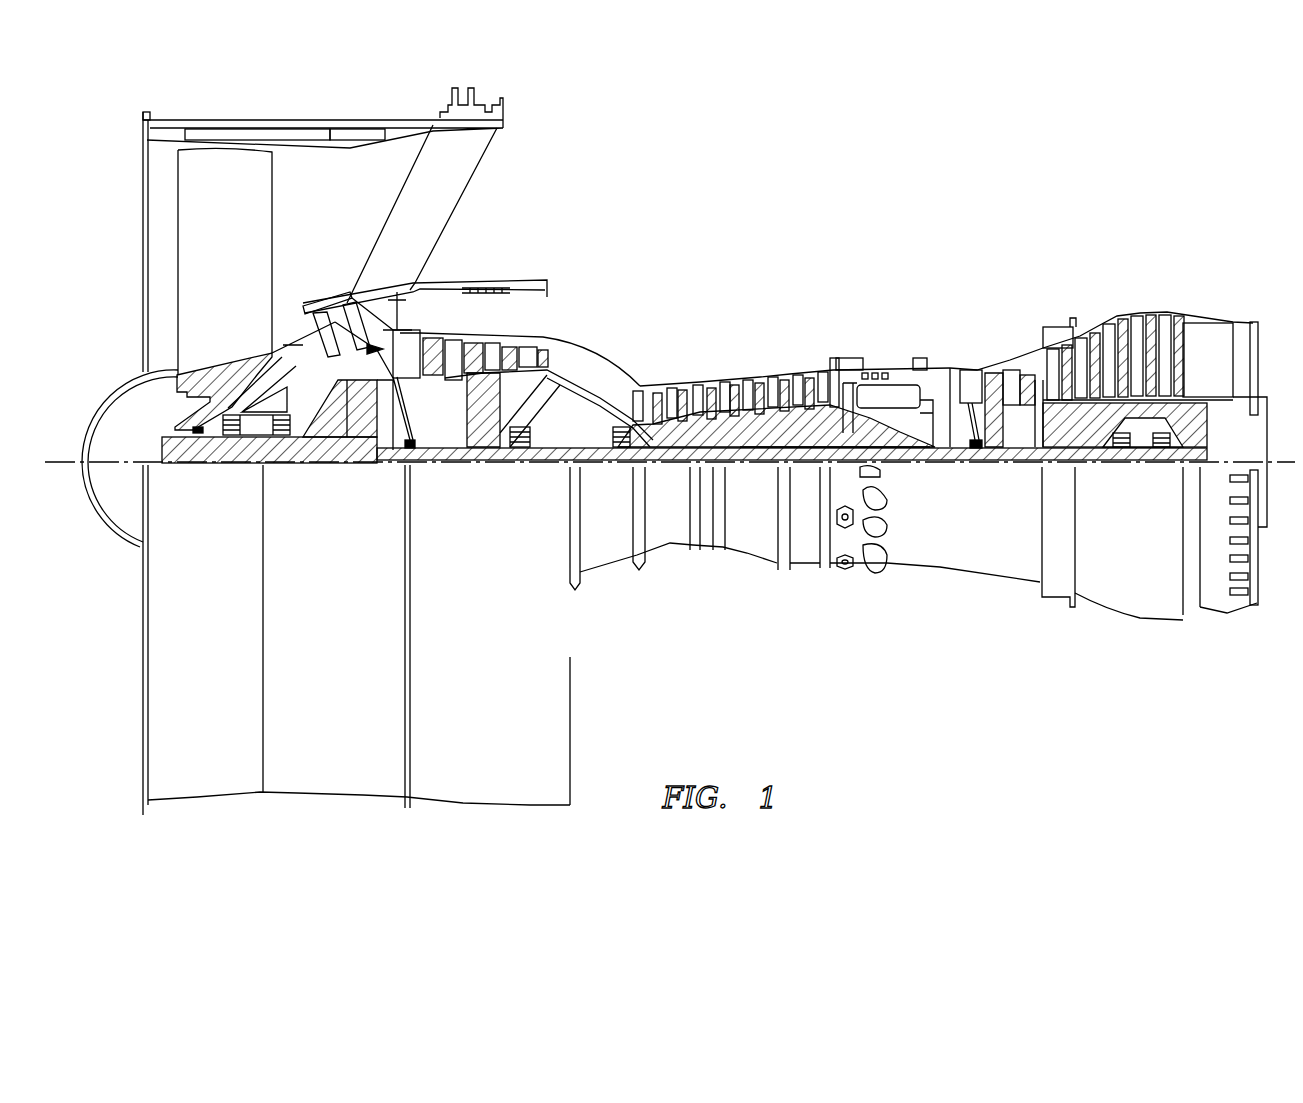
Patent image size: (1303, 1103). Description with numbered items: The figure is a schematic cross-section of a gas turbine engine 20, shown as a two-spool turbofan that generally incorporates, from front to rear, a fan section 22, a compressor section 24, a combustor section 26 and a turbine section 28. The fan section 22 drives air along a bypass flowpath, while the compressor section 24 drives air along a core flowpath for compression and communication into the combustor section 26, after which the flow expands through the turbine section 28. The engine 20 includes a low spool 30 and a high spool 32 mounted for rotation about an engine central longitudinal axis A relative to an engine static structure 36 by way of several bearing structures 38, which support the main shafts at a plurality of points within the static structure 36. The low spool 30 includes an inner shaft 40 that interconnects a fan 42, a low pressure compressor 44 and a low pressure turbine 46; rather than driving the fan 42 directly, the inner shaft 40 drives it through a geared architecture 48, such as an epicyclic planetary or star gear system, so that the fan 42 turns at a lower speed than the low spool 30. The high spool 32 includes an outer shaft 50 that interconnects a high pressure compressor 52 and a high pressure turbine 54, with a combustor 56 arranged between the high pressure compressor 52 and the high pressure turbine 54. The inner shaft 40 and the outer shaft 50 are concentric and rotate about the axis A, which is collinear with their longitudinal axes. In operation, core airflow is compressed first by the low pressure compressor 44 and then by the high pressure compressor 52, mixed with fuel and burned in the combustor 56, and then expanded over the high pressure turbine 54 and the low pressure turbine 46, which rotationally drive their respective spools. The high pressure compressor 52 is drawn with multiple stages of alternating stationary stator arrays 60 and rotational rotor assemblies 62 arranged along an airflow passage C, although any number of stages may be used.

The gas turbine engine 20 is at (947, 157).
The fan section 22 is at (407, 100).
The compressor section 24 is at (413, 247).
The combustor section 26 is at (835, 247).
The turbine section 28 is at (1195, 247).
The low spool 30 is at (757, 466).
The high spool 32 is at (803, 417).
The engine static structure 36 is at (808, 563).
The bearing structures 38 is at (438, 520).
The inner shaft 40 is at (597, 457).
The fan 42 is at (229, 272).
The low pressure compressor 44 is at (483, 340).
The low pressure turbine 46 is at (1117, 340).
The geared architecture 48 is at (357, 455).
The outer shaft 50 is at (923, 467).
The high pressure compressor 52 is at (740, 423).
The high pressure turbine 54 is at (967, 370).
The combustor 56 is at (887, 397).
The stationary stator arrays 60 is at (453, 347).
The rotational rotor assemblies 62 is at (658, 460).
The engine central longitudinal axis A is at (62, 470).
The airflow passage C is at (300, 325).